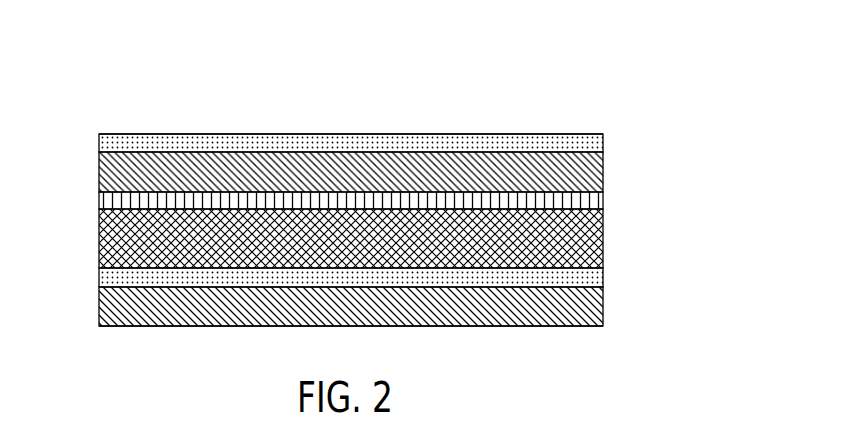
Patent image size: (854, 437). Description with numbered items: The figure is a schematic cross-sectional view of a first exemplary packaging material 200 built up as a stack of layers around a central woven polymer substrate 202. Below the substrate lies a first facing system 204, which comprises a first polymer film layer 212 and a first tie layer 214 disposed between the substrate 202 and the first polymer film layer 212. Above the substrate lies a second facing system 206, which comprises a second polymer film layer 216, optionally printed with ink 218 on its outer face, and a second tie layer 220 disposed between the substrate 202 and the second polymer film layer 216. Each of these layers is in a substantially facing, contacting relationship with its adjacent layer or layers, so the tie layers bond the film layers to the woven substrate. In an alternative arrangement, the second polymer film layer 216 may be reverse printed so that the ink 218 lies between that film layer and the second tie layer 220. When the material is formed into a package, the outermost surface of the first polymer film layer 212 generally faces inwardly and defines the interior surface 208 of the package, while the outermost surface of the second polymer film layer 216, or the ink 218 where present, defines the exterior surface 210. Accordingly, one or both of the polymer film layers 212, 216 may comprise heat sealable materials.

The packaging material 200 is at (714, 145).
The woven polymer substrate 202 is at (603, 237).
The first facing system 204 is at (93, 270).
The second facing system 206 is at (93, 135).
The interior surface 208 is at (200, 326).
The exterior surface 210 is at (209, 134).
The first polymer film layer 212 is at (603, 297).
The first tie layer 214 is at (603, 273).
The second polymer film layer 216 is at (603, 172).
The ink 218 is at (603, 143).
The second tie layer 220 is at (603, 200).